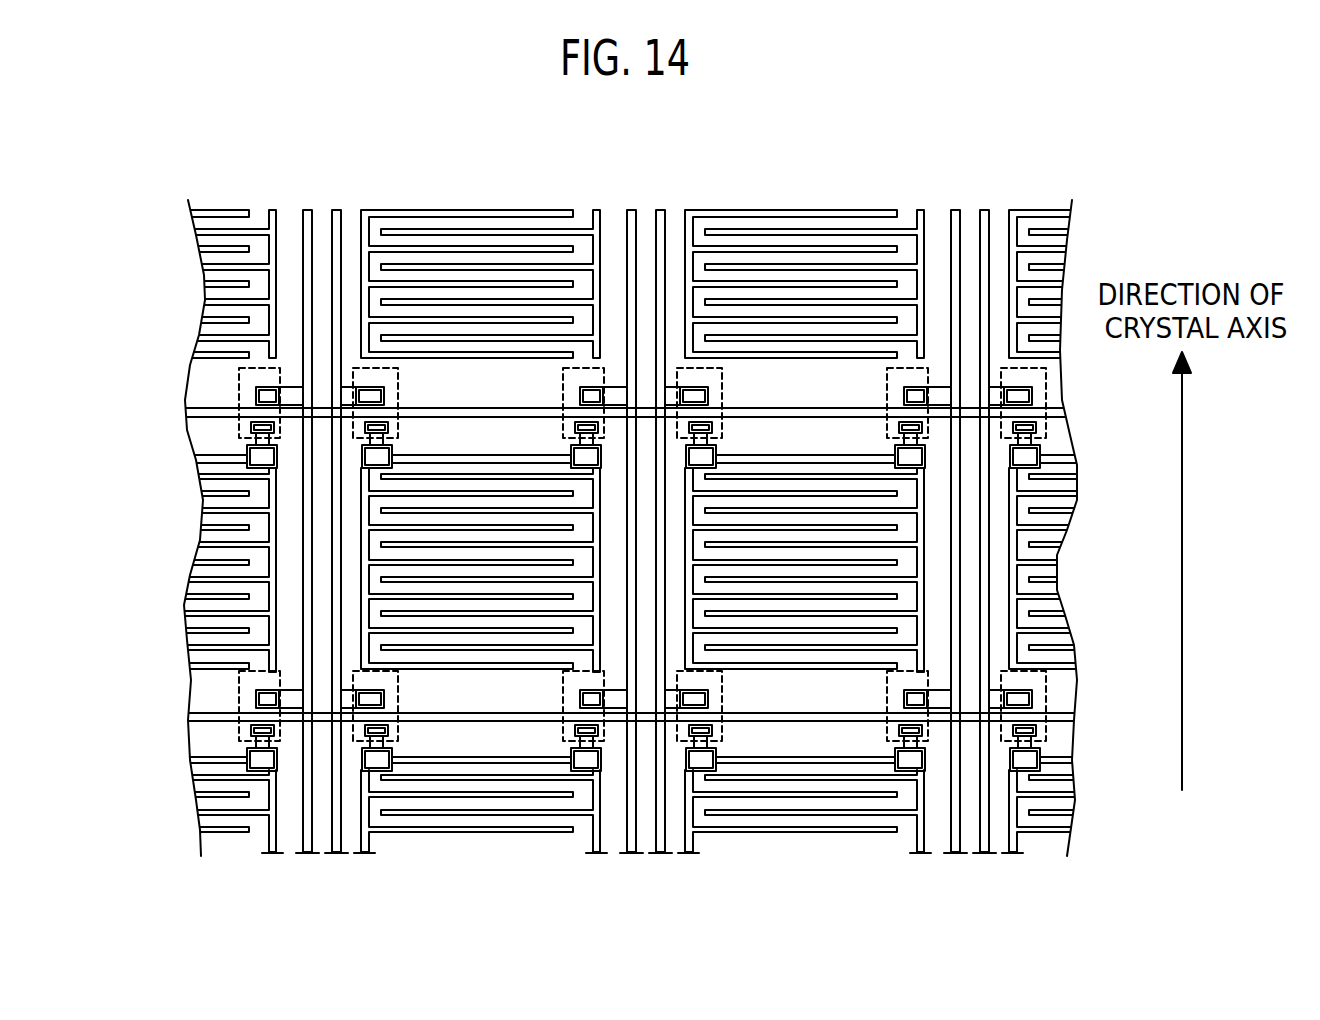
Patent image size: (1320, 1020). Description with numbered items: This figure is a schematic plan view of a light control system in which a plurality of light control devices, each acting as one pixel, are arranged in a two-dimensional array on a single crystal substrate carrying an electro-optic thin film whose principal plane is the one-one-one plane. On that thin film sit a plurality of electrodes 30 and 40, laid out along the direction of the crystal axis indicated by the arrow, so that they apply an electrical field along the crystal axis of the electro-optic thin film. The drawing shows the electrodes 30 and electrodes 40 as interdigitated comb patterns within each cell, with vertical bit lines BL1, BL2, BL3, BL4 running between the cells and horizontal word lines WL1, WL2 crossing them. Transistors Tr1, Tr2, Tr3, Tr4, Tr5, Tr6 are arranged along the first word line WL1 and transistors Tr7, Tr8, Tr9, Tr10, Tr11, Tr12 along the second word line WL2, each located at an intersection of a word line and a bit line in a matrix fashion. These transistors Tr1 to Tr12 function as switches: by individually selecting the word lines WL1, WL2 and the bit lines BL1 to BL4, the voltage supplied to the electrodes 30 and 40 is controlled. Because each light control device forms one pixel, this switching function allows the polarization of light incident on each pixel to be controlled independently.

The electrode 30 is at (426, 212).
The electrode 40 is at (591, 210).
The bit line BL1 is at (336, 193).
The bit line BL2 is at (631, 193).
The bit line BL3 is at (660, 193).
The bit line BL4 is at (955, 193).
The word line WL1 is at (606, 409).
The word line WL2 is at (606, 714).
The transistor Tr1 is at (242, 380).
The transistor Tr2 is at (400, 384).
The transistor Tr3 is at (560, 437).
The transistor Tr4 is at (724, 384).
The transistor Tr5 is at (886, 437).
The transistor Tr6 is at (1047, 397).
The transistor Tr7 is at (242, 686).
The transistor Tr8 is at (398, 690).
The transistor Tr9 is at (560, 742).
The transistor Tr10 is at (724, 690).
The transistor Tr11 is at (886, 742).
The transistor Tr12 is at (1047, 712).